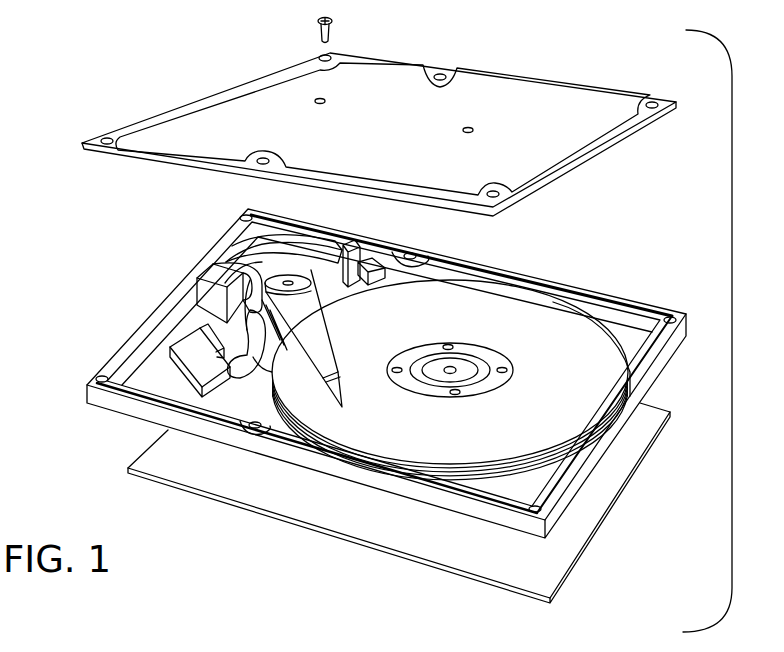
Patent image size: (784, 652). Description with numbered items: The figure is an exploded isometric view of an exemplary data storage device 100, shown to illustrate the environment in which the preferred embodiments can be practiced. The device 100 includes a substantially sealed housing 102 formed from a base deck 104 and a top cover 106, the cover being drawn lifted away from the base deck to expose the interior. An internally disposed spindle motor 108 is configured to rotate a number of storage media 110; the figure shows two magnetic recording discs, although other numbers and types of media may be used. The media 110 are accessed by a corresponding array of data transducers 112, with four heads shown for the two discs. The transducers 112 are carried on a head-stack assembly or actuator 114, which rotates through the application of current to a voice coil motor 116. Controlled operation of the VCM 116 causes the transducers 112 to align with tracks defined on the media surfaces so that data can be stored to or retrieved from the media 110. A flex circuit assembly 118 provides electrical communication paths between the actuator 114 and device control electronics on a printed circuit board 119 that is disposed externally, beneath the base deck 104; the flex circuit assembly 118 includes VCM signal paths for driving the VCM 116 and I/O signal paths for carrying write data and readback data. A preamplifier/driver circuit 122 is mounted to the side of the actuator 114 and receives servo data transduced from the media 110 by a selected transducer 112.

The data storage device 100 is at (132, 55).
The housing 102 is at (82, 252).
The base deck 104 is at (657, 363).
The top cover 106 is at (467, 92).
The spindle motor 108 is at (463, 365).
The storage media 110 is at (476, 470).
The data transducers 112 is at (345, 406).
The actuator 114 is at (318, 342).
The voice coil motor 116 is at (237, 223).
The flex circuit assembly 118 is at (217, 310).
The printed circuit board 119 is at (563, 582).
The preamplifier/driver circuit 122 is at (197, 270).